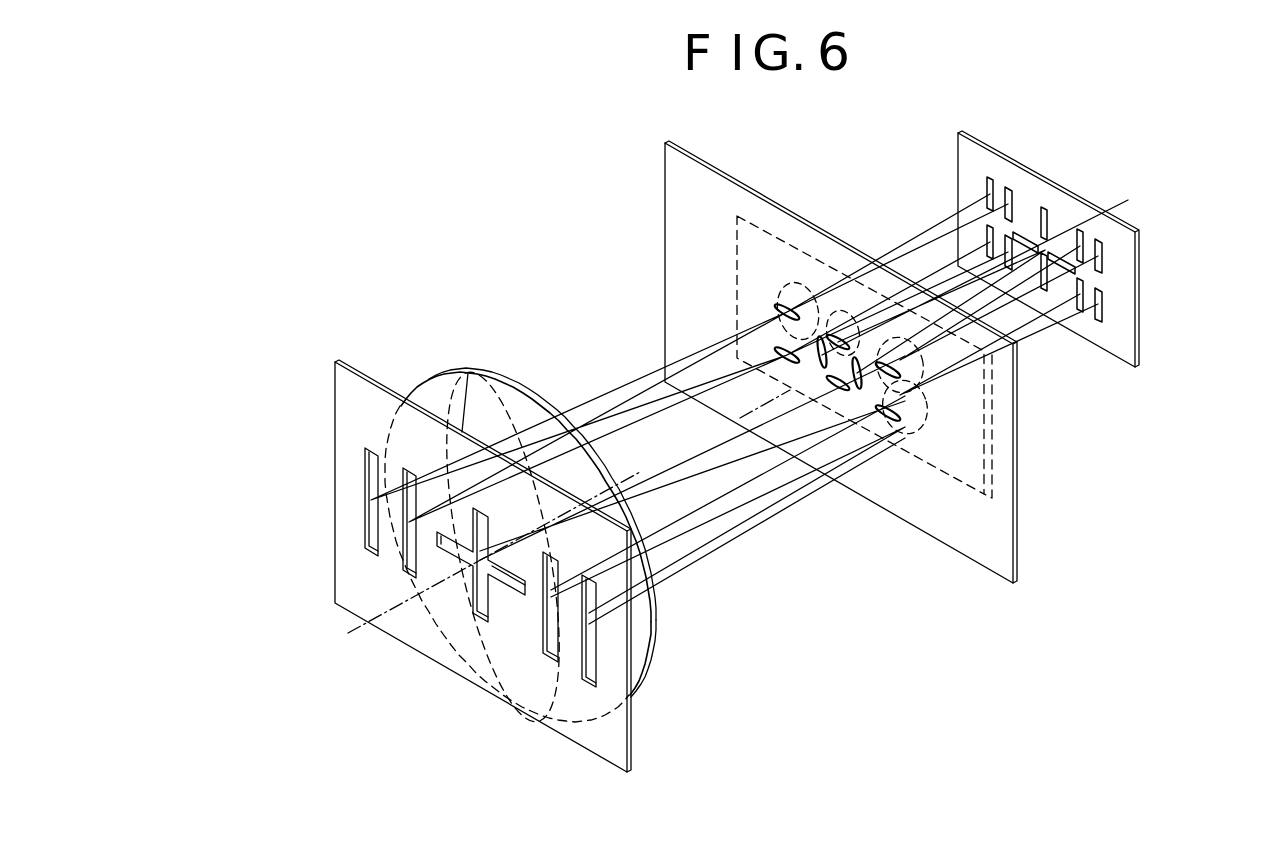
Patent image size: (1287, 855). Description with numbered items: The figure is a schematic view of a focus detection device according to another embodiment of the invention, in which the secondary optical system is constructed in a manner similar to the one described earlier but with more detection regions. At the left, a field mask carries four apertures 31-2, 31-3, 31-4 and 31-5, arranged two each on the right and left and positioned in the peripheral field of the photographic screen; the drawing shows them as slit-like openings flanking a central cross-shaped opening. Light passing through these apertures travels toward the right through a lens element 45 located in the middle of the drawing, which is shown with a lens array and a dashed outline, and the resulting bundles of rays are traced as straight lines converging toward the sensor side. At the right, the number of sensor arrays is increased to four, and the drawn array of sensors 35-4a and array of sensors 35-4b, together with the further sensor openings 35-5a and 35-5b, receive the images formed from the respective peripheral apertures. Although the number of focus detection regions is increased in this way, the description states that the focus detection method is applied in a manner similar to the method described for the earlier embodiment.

The aperture 31-2 is at (600, 720).
The aperture 31-3 is at (398, 557).
The aperture 31-4 is at (600, 722).
The aperture 31-5 is at (365, 532).
The array of sensors 35-4a is at (1105, 247).
The array of sensors 35-4b is at (1105, 313).
The slit pair 35-5a is at (990, 177).
The slit pair 35-5b is at (990, 226).
The lens array plate 45 is at (986, 437).